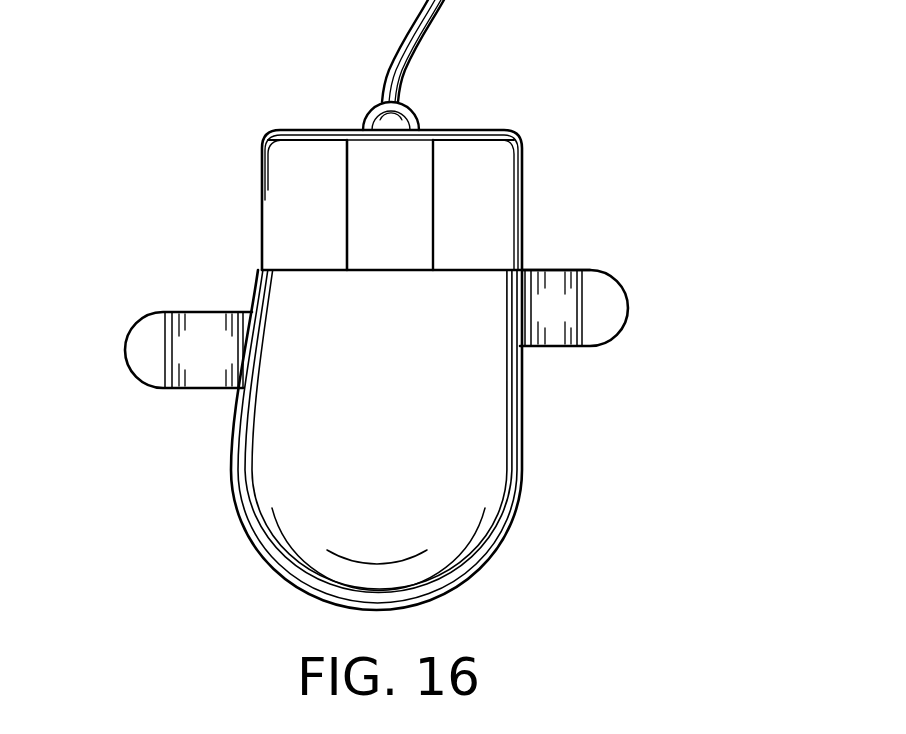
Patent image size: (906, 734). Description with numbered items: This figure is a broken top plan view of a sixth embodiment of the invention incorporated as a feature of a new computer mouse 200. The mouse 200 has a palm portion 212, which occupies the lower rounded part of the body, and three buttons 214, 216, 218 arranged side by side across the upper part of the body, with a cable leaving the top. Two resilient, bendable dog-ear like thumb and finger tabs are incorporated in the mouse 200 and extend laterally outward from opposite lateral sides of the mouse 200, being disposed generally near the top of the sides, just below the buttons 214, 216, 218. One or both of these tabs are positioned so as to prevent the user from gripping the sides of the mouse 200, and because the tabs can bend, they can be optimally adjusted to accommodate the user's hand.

The mouse 200 is at (588, 225).
The palm portion 212 is at (425, 462).
The button 214 is at (337, 220).
The button 216 is at (422, 220).
The button 218 is at (503, 220).